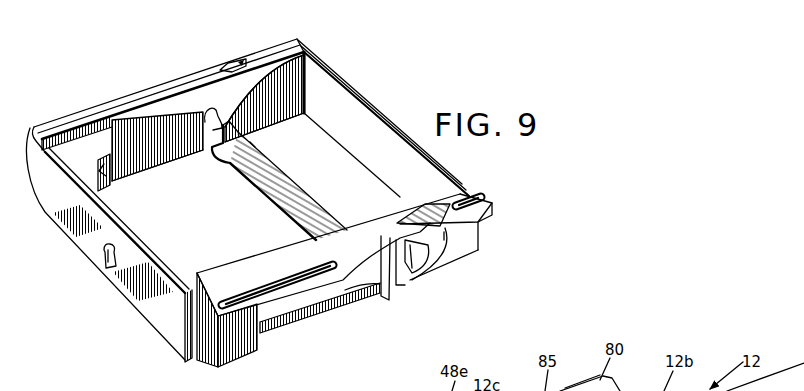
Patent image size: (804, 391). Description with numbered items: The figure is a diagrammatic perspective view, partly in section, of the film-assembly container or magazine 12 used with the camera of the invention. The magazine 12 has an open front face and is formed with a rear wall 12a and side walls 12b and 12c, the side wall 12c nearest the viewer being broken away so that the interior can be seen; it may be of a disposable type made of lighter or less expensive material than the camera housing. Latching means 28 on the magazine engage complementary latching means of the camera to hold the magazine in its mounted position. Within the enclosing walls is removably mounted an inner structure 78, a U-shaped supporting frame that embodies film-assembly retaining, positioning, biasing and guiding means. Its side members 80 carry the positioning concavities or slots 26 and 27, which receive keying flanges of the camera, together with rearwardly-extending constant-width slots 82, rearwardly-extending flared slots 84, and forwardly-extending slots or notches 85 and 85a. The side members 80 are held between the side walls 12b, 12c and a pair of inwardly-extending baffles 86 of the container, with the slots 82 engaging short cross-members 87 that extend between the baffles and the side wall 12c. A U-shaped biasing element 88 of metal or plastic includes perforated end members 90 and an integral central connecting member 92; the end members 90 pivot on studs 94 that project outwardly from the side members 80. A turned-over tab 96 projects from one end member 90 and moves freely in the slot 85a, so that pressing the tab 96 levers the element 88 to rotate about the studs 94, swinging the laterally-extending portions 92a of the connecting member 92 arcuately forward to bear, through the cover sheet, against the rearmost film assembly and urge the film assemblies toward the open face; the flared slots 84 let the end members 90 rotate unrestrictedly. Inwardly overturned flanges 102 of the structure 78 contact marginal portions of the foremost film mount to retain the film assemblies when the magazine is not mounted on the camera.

The magazine 12 is at (398, 92).
The rear wall 12a is at (367, 175).
The side wall 12b is at (388, 112).
The side wall 12c is at (162, 82).
The slot 26 is at (288, 270).
The slot 27 is at (481, 193).
The latching means 28 is at (105, 258).
The inner structure 78 is at (447, 273).
The side members 80 is at (283, 75).
The slot 82 is at (255, 345).
The flared slot 84 is at (215, 125).
The slot 85 is at (235, 62).
The slot 85a is at (458, 225).
The baffle 86 is at (113, 143).
The cross-member 87 is at (112, 190).
The biasing element 88 is at (340, 172).
The end member 90 is at (400, 286).
The connecting member 92 is at (268, 163).
The laterally-extending portion 92a is at (220, 160).
The stud 94 is at (385, 283).
The tab 96 is at (427, 218).
The overturned flange 102 is at (44, 146).